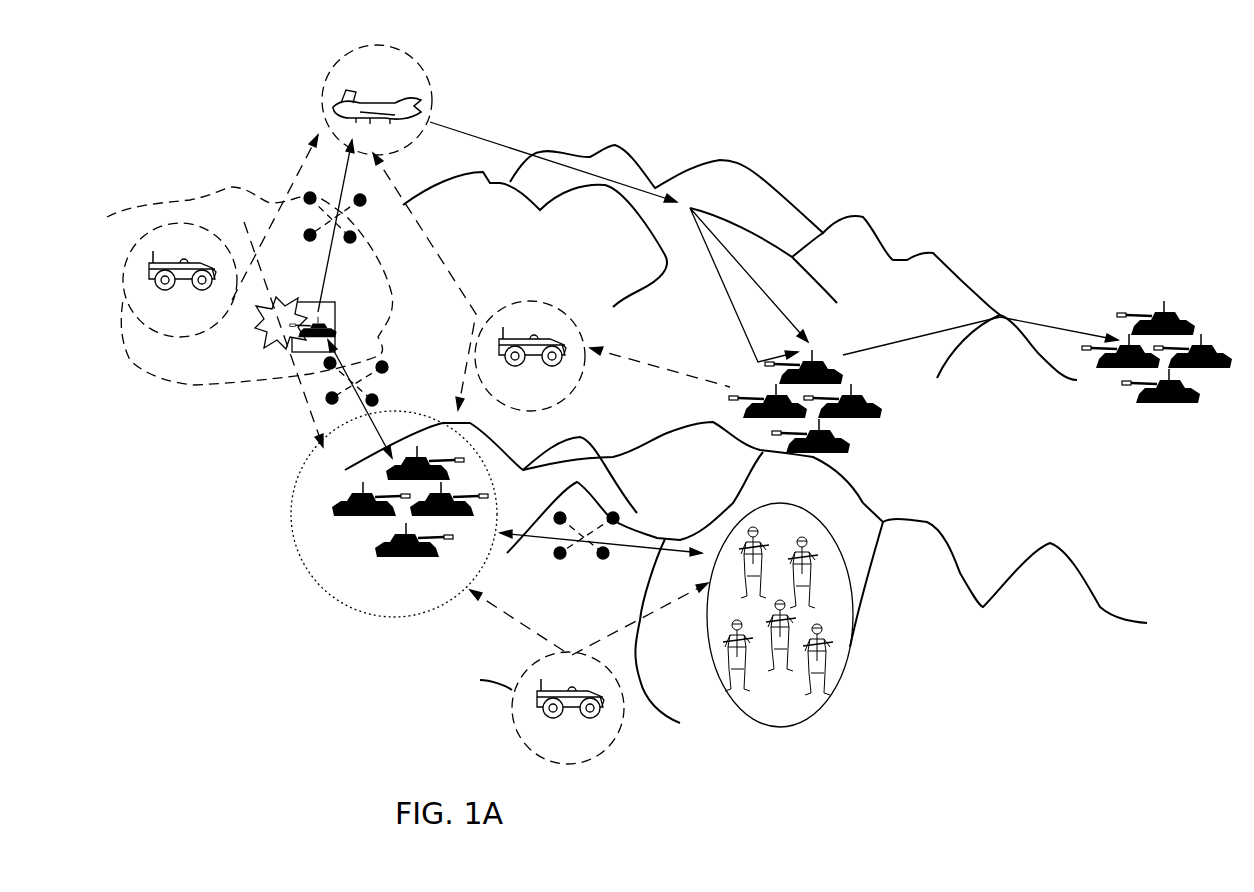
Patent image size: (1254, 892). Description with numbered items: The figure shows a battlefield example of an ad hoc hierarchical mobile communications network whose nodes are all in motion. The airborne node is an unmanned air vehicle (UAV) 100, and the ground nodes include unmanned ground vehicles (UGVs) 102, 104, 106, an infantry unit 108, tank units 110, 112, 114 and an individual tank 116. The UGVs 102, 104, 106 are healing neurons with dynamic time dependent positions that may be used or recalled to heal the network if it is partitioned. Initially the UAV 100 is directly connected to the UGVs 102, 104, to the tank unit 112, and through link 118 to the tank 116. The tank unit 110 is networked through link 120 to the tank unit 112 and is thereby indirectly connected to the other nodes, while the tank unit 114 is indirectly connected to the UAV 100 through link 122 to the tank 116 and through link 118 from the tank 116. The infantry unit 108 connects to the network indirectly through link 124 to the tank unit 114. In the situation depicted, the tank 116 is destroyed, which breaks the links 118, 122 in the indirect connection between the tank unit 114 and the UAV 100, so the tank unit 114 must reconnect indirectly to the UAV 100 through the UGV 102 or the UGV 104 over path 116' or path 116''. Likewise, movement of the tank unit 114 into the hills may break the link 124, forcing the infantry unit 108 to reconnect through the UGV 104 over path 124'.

The unmanned air vehicle (UAV) 100 is at (335, 58).
The unmanned ground vehicle (UGV) 102 is at (532, 296).
The unmanned ground vehicle (UGV) 104 is at (186, 223).
The unmanned ground vehicle (UGV) 106 is at (512, 694).
The infantry unit 108 is at (850, 677).
The tank unit 110 is at (1141, 419).
The tank unit 112 is at (895, 449).
The tank unit 114 is at (293, 547).
The individual tank 116 is at (279, 286).
The path 116' is at (440, 281).
The path 116'' is at (253, 334).
The link 118 is at (327, 277).
The link 120 is at (950, 327).
The link 122 is at (380, 420).
The link 124 is at (606, 524).
The path 124' is at (684, 637).